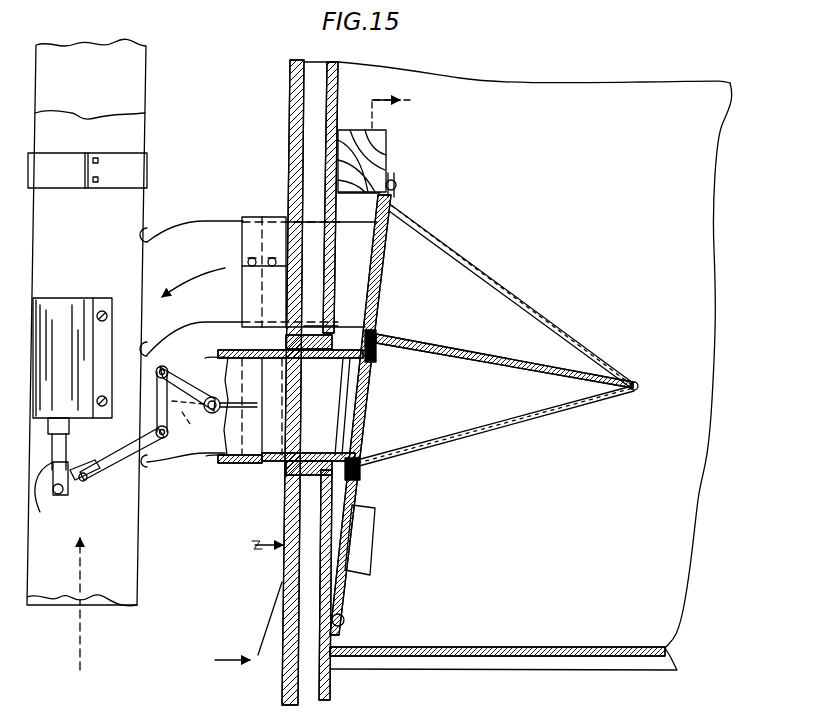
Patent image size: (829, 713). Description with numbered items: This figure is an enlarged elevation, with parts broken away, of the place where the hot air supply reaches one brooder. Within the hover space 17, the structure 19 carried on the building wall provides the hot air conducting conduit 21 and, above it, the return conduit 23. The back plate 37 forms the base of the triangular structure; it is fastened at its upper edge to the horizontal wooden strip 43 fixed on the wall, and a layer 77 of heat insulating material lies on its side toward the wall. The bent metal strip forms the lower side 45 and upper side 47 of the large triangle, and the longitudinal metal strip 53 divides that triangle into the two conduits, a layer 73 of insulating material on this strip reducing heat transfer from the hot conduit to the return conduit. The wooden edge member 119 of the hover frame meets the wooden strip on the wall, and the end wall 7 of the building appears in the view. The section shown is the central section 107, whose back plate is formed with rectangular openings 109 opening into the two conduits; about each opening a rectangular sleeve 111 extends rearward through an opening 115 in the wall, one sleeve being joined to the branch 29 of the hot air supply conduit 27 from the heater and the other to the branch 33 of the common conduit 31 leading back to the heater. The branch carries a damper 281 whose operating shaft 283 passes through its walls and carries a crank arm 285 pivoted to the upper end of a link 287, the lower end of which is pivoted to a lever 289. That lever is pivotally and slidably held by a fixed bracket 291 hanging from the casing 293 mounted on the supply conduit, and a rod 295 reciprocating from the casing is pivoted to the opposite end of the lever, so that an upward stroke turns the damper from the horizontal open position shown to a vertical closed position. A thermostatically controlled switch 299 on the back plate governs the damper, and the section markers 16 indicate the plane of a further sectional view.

The end wall 7 is at (480, 647).
The section line 16- 16 is at (313, 381).
The hover space 17 is at (577, 520).
The structure 19 is at (585, 343).
The hot air conducting conduit 21 is at (462, 440).
The return conduit 23 is at (518, 330).
The conduit 27 is at (148, 137).
The branch 29 is at (200, 463).
The common conduit 31 is at (148, 80).
The branch 33 is at (200, 220).
The back plate 37 is at (342, 603).
The horizontal wooden strip 43 is at (388, 150).
The lower side 45 is at (557, 413).
The upper side 47 is at (500, 292).
The metal strip 53 is at (504, 355).
The layer of heat insulating material 73 is at (430, 348).
The layer of heat insulating material 77 is at (372, 246).
The central section 107 is at (640, 382).
The rectangular openings 109 is at (360, 452).
The sleeve 111 is at (300, 360).
The opening 115 is at (290, 478).
The edge member 119 is at (376, 358).
The damper 281 is at (203, 425).
The operating shaft 283 is at (232, 362).
The crank arm 285 is at (190, 380).
The link 287 is at (160, 388).
The lever 289 is at (110, 470).
The fixed bracket 291 is at (90, 458).
The casing 293 is at (70, 298).
The rod 295 is at (54, 494).
The thermostatically controlled switch 299 is at (372, 545).